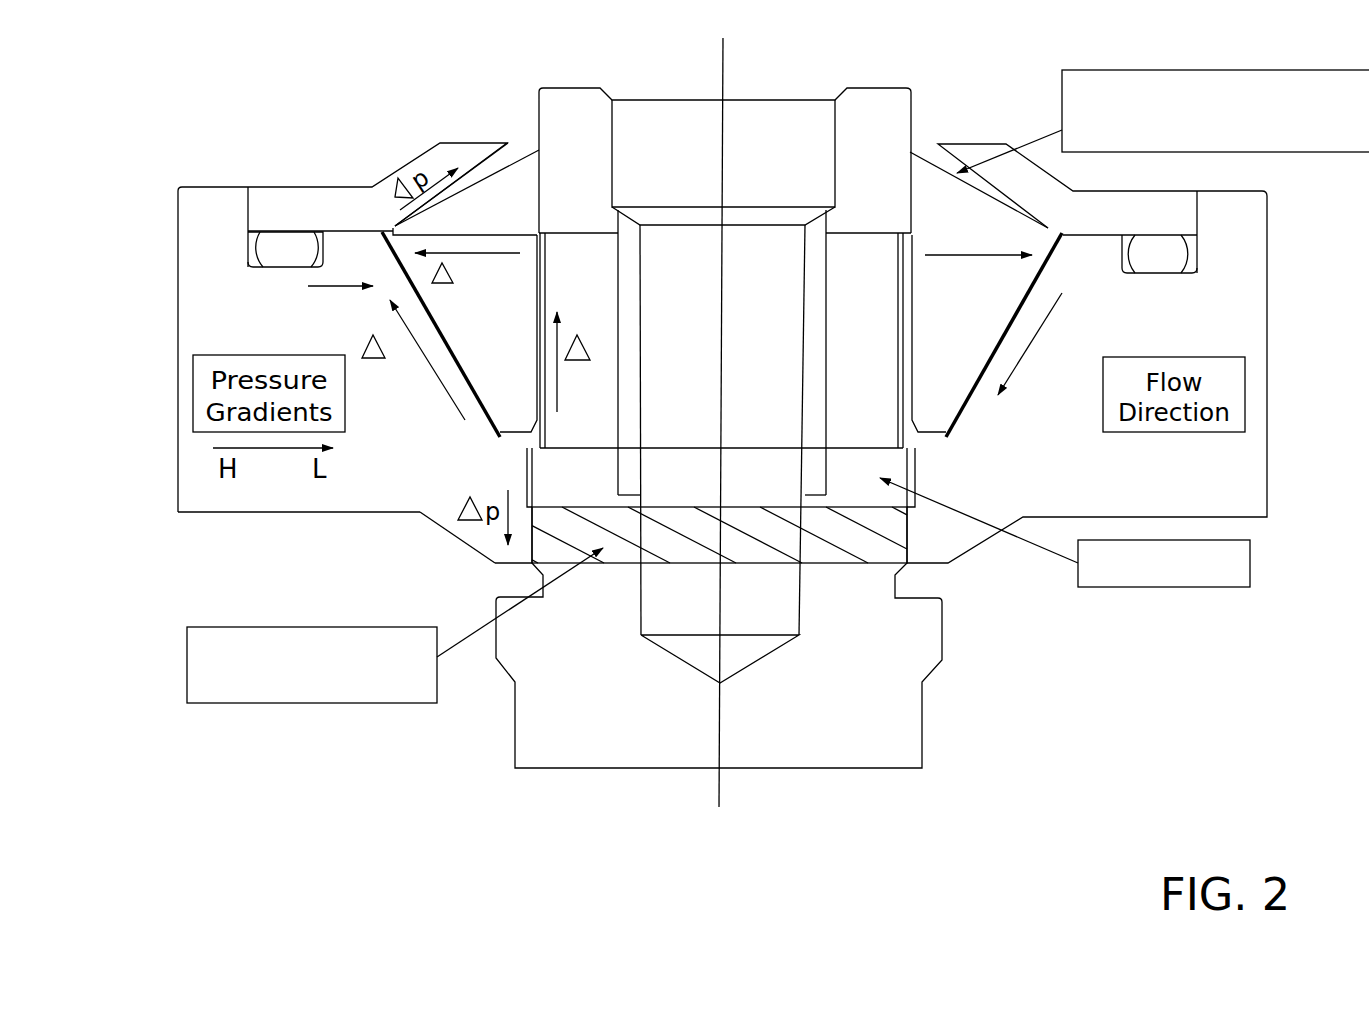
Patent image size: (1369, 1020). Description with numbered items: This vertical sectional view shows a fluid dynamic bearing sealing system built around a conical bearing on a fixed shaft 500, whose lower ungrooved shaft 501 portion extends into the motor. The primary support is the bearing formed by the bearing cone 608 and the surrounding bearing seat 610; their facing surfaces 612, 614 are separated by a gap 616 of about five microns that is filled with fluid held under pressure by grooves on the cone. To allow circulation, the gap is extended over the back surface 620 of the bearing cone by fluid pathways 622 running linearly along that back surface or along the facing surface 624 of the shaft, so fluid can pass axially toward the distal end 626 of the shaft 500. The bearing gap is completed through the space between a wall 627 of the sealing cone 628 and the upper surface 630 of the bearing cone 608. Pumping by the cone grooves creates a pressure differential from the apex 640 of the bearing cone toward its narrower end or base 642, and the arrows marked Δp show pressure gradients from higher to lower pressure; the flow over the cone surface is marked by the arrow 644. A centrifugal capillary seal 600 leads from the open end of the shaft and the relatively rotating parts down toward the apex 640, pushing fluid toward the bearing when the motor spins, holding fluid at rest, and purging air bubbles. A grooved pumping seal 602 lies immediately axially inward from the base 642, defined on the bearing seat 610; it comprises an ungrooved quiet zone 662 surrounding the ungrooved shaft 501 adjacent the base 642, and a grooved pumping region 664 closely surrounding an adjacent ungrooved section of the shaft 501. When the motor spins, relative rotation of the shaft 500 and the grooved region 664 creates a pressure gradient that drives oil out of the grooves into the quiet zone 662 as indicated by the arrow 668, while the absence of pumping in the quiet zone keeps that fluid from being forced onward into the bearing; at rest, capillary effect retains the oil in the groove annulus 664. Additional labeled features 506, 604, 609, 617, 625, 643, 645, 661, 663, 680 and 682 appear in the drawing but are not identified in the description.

The shaft 500 is at (700, 75).
The ungrooved shaft 501 is at (719, 665).
The housing 506 is at (239, 263).
The centrifugal capillary seal 600 is at (882, 131).
The grooved pumping seal 602 is at (551, 595).
The fluid flow path 604 is at (328, 303).
The bearing cone 608 is at (988, 347).
The flow direction 609 is at (1037, 338).
The bearing seat 610 is at (1212, 322).
The facing surface of the bearing cone 612 is at (989, 362).
The facing surface of the bearing seat 614 is at (962, 410).
The gap 616 is at (945, 438).
The axial gap 617 is at (903, 283).
The back surface of the bearing cone 620 is at (907, 353).
The fluid pathways 622 is at (913, 325).
The facing surface of the shaft 624 is at (902, 413).
The conical bearing surface 625 is at (1008, 254).
The distal end of the shaft 626 is at (882, 107).
The wall of the sealing cone 627 is at (935, 230).
The sealing cone 628 is at (528, 225).
The upper surface of the bearing cone 630 is at (957, 237).
The apex of the bearing cone 640 is at (383, 232).
The narrower end of the bearing cone 642 is at (505, 440).
The pressure gradient 643 is at (490, 255).
The flow arrow 644 is at (437, 378).
The pressure gradient 645 is at (558, 377).
The seal taper surface 661 is at (453, 195).
The quiet zone 662 is at (522, 118).
The seal outer surface 663 is at (482, 160).
The grooved pumping region 664 is at (918, 563).
The oil flow arrow 668 is at (315, 225).
The bearing race 680 is at (248, 267).
The ball 682 is at (283, 255).